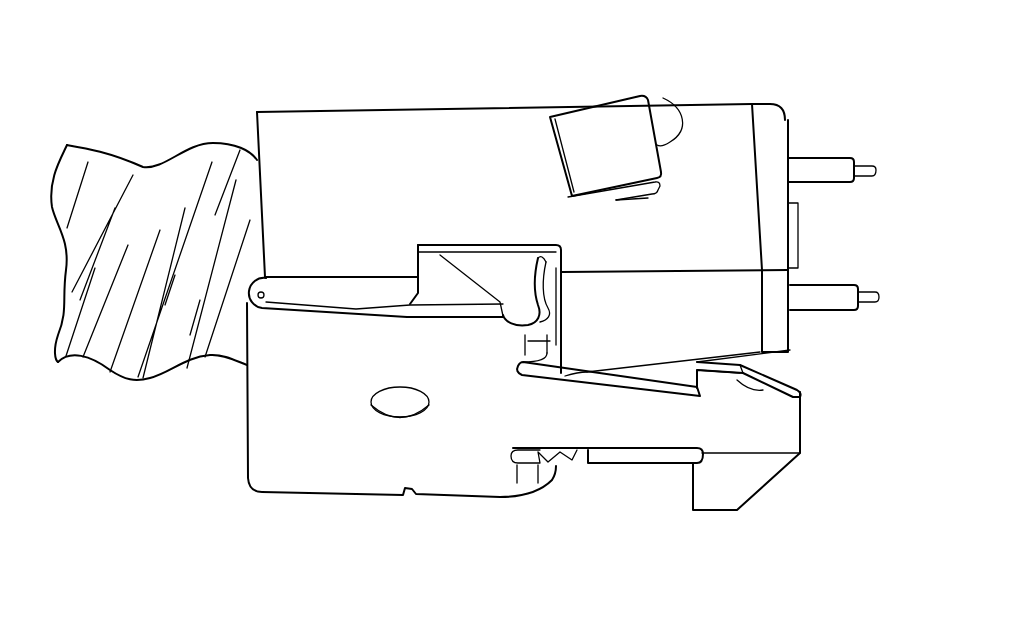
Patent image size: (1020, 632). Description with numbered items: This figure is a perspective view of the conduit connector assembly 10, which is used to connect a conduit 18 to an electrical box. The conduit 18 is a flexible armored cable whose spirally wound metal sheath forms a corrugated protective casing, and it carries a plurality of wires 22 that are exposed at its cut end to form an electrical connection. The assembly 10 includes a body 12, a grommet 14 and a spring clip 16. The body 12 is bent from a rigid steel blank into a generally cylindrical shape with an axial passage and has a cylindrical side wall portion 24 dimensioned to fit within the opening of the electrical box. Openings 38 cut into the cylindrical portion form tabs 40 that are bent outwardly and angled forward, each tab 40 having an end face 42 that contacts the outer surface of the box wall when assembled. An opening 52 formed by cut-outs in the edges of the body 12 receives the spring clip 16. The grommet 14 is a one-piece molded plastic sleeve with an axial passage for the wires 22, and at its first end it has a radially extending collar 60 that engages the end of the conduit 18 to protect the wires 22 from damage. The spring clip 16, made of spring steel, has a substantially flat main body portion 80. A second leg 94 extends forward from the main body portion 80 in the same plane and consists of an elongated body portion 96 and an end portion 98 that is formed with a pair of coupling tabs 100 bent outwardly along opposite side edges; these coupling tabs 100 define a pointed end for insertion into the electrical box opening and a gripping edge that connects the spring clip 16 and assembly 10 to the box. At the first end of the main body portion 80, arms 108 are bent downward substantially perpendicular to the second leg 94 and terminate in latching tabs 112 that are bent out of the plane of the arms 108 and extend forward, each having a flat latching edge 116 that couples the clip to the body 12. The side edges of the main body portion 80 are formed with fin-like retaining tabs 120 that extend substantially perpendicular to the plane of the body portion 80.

The conduit connector assembly 10 is at (323, 70).
The body 12 is at (530, 296).
The grommet 14 is at (767, 187).
The spring clip 16 is at (530, 425).
The conduit 18 is at (176, 152).
The wires 22 is at (866, 158).
The cylindrical side wall portion 24 is at (368, 127).
The openings 38 is at (644, 200).
The tabs 40 is at (630, 134).
The end face 42 is at (673, 100).
The opening 52 is at (445, 272).
The collar 60 is at (769, 118).
The main body portion 80 is at (340, 470).
The second leg 94 is at (582, 425).
The elongated body portion 96 is at (647, 440).
The end portion 98 is at (803, 425).
The coupling tabs 100 is at (758, 390).
The arms 108 is at (548, 340).
The latching tabs 112 is at (545, 262).
The flat latching edge 116 is at (576, 251).
The retaining tabs 120 is at (437, 285).